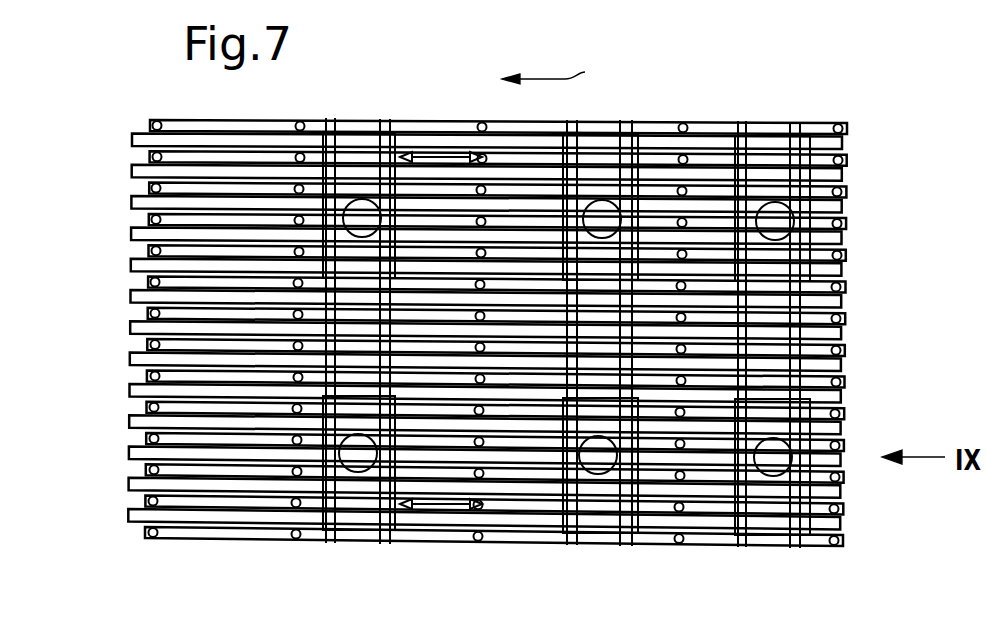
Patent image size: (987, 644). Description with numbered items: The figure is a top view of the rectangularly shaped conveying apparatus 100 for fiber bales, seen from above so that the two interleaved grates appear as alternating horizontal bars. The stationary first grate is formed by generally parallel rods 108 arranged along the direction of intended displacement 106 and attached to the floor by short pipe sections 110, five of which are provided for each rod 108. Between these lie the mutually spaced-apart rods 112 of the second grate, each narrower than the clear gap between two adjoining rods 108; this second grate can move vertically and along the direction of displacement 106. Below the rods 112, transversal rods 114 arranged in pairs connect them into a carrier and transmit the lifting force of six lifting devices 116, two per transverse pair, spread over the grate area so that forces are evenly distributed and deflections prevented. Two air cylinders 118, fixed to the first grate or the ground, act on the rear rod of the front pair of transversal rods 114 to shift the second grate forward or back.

The conveying apparatus 100 is at (710, 94).
The direction of intended displacement 106 is at (563, 62).
The rods 108 is at (180, 247).
The pipe sections 110 is at (490, 123).
The rods 112 is at (135, 200).
The transversal rods 114 is at (380, 125).
The lifting devices 116 is at (323, 124).
The air cylinders 118 is at (415, 125).